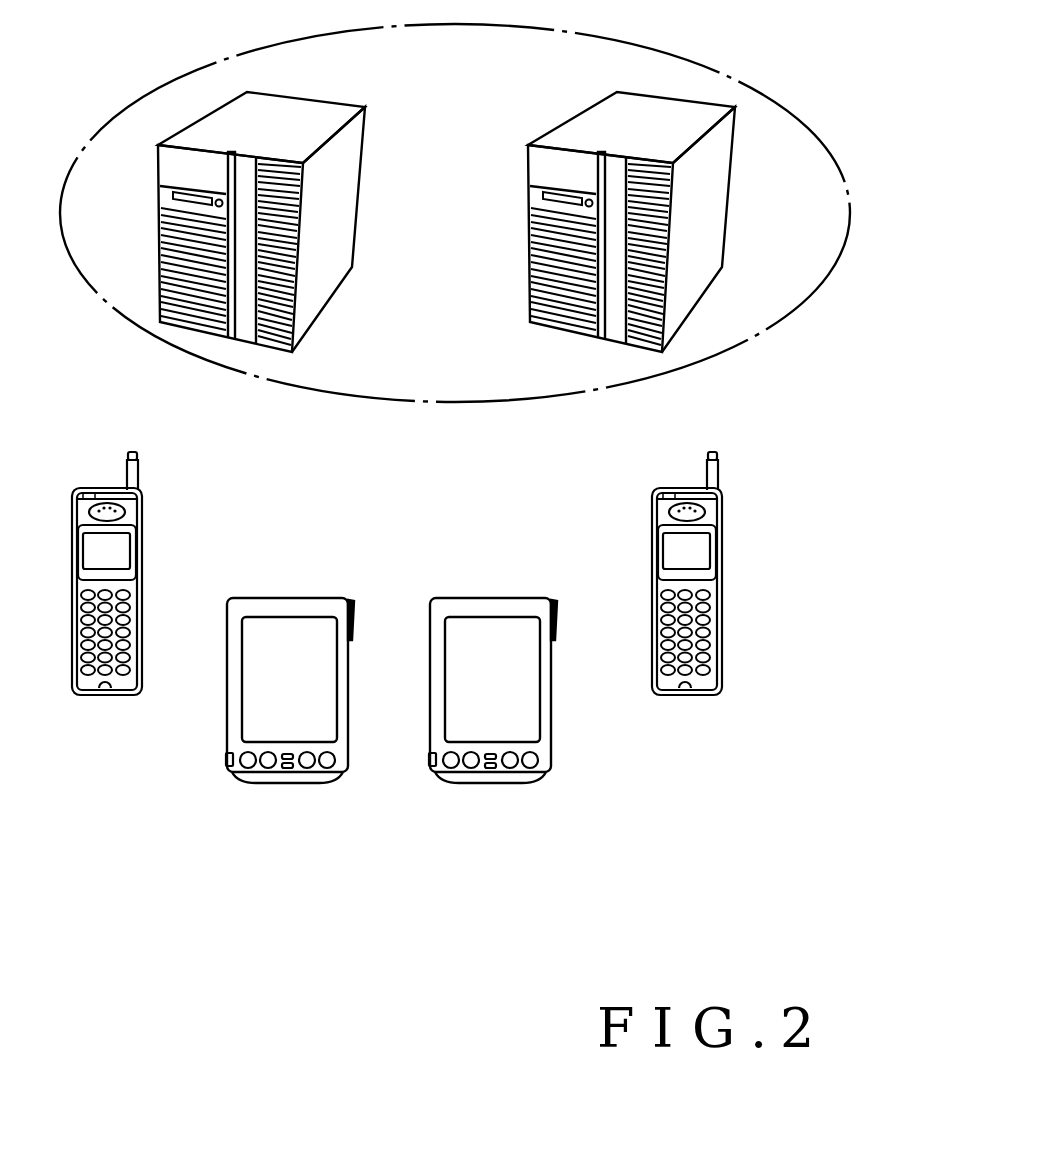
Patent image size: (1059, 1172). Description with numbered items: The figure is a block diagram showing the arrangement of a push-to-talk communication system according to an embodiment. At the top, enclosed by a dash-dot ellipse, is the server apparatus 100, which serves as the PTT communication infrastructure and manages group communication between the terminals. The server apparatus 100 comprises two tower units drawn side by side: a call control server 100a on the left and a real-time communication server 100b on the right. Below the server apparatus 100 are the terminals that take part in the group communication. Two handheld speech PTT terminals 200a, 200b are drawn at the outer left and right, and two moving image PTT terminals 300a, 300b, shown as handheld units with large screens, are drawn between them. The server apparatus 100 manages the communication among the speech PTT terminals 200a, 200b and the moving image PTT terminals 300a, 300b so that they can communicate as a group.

The server apparatus 100 is at (731, 78).
The call control server 100a is at (359, 190).
The real-time communication server 100b is at (557, 328).
The speech PTT terminal 200a is at (143, 511).
The speech PTT terminal 200b is at (723, 511).
The moving image PTT terminal 300a is at (292, 785).
The moving image PTT terminal 300b is at (497, 785).